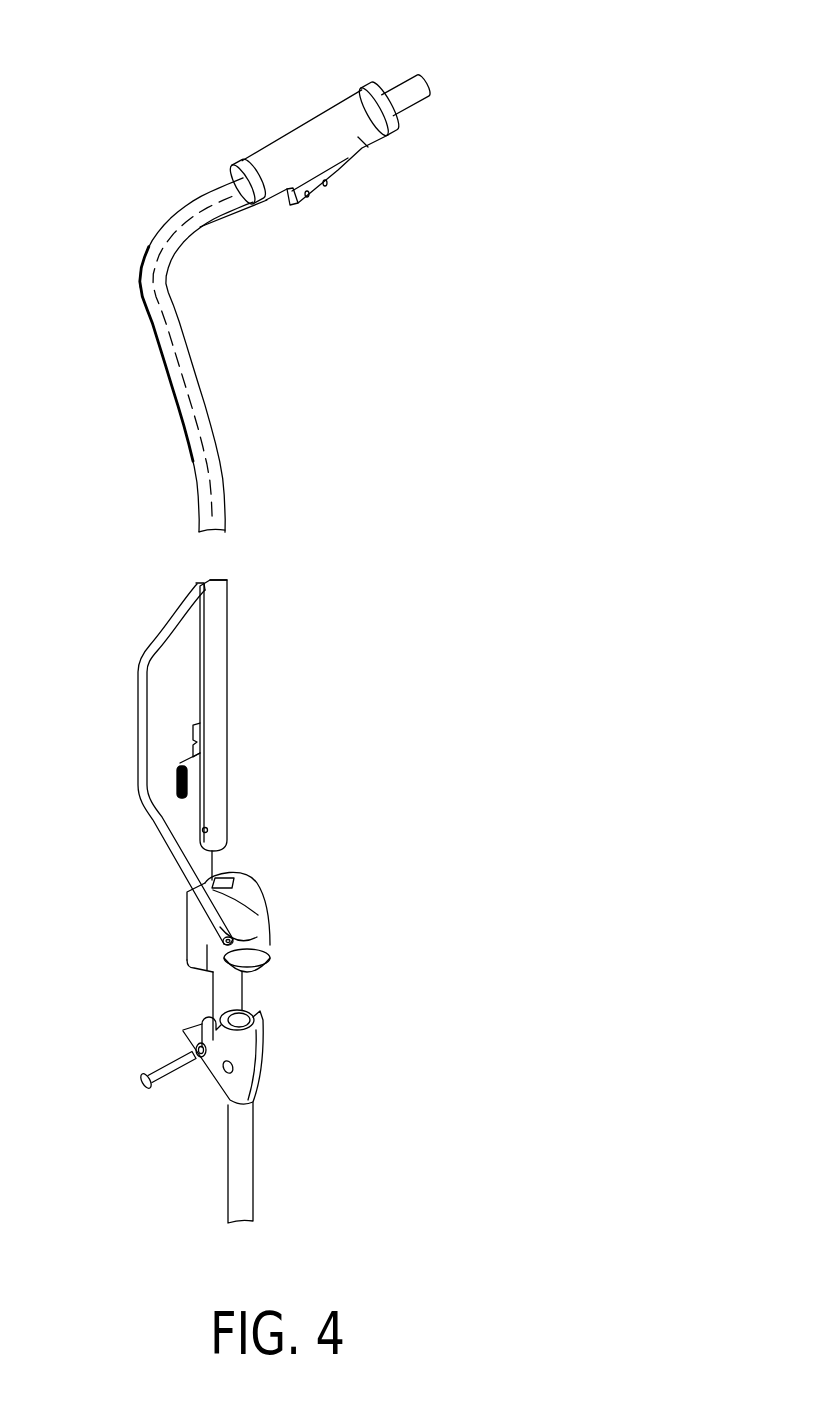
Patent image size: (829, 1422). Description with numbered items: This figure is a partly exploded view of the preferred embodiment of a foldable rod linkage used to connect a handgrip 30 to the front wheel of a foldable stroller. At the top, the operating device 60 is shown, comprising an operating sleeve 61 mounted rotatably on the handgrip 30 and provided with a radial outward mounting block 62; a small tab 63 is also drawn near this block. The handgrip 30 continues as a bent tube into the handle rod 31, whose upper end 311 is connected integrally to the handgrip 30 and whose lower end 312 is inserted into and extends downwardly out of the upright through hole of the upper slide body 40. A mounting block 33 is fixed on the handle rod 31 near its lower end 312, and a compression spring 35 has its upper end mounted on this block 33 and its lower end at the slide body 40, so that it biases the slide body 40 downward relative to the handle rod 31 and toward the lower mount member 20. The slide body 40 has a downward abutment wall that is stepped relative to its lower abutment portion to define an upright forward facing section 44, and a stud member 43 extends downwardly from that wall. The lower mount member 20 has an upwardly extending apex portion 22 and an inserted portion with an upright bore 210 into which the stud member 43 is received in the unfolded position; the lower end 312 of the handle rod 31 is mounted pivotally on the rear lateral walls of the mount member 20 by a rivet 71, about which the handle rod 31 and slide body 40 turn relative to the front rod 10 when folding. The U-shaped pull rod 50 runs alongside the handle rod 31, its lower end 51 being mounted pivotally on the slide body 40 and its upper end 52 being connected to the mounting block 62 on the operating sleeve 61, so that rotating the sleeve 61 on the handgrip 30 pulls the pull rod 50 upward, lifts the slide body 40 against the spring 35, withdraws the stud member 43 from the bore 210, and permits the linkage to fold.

The front rod 10 is at (268, 1177).
The lower mount member 20 is at (291, 1071).
The apex portion 22 is at (265, 1023).
The upright bore 210 is at (313, 1003).
The handgrip 30 is at (183, 203).
The handle rod 31 is at (293, 713).
The upper end 311 is at (217, 593).
The lower end 312 is at (218, 837).
The mounting block 33 is at (195, 724).
The compression spring 35 is at (176, 768).
The upper slide body 40 is at (259, 927).
The stud member 43 is at (233, 977).
The upright forward facing section 44 is at (273, 957).
The pull rod 50 is at (127, 739).
The lower end 51 is at (150, 642).
The upper end 52 is at (238, 214).
The operating device 60 is at (317, 102).
The operating sleeve 61 is at (358, 137).
The mounting block 62 is at (320, 193).
The tab of grip 63 is at (300, 204).
The rivet 71 is at (157, 1067).